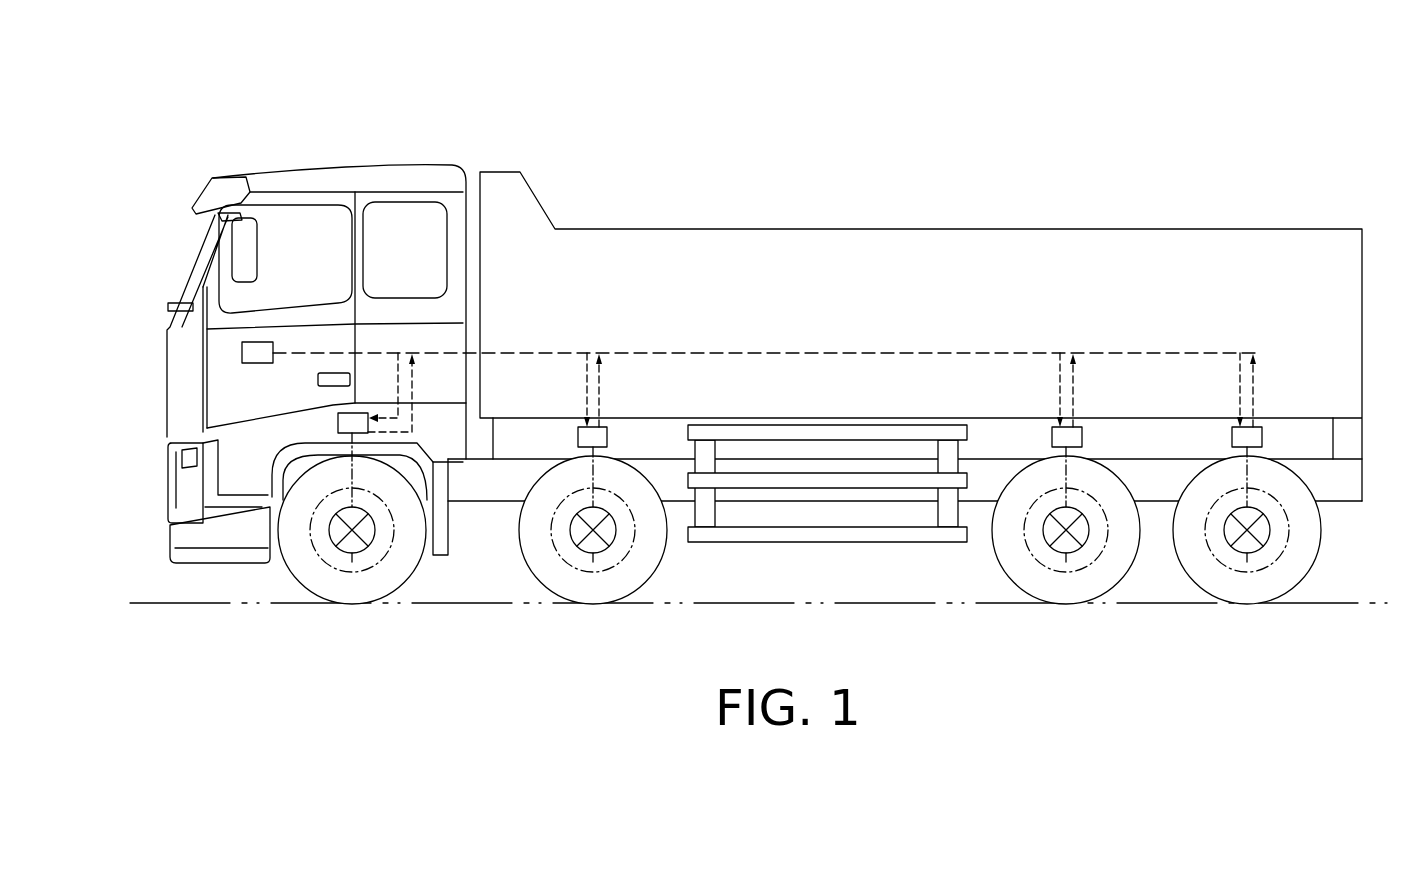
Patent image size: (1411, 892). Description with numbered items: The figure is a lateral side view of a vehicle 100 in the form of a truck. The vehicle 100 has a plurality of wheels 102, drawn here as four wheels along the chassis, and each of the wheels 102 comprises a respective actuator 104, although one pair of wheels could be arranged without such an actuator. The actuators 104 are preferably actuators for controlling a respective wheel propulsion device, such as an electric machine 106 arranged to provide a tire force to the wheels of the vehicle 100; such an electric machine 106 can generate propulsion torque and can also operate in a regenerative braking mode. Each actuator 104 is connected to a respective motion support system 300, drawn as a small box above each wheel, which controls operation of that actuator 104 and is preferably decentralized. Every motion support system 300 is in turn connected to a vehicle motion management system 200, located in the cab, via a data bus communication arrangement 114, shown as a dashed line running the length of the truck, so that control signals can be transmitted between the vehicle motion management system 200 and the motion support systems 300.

The vehicle 100 is at (805, 86).
The wheels 102 is at (342, 585).
The actuator 104 is at (352, 545).
The electric machine 106 is at (338, 530).
The data bus communication arrangement 114 is at (875, 352).
The vehicle motion management system 200 is at (240, 353).
The motion support system 300 is at (337, 425).